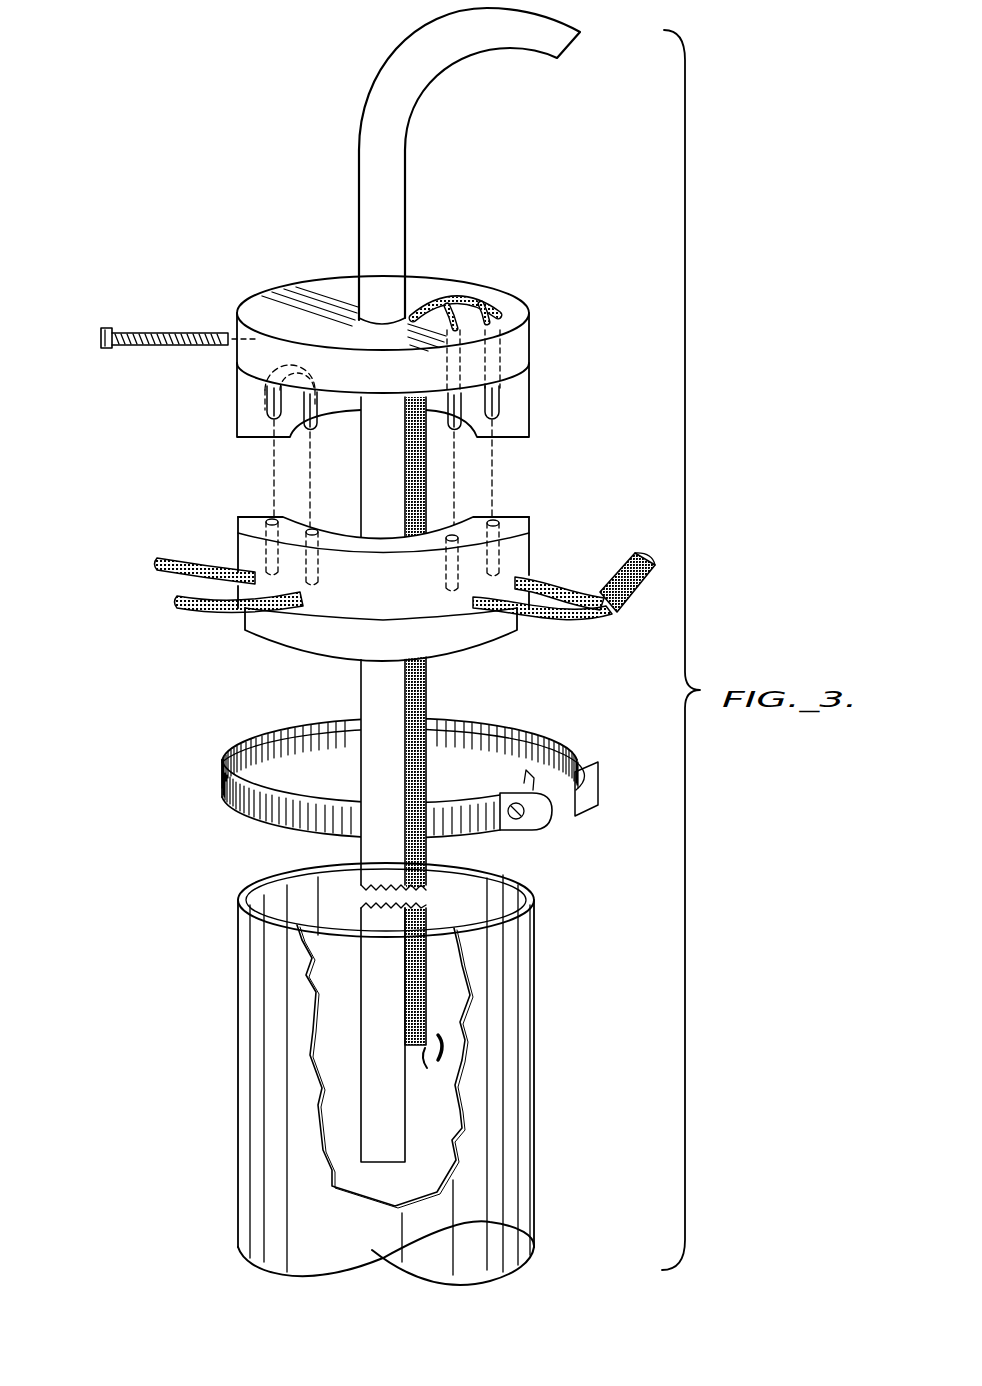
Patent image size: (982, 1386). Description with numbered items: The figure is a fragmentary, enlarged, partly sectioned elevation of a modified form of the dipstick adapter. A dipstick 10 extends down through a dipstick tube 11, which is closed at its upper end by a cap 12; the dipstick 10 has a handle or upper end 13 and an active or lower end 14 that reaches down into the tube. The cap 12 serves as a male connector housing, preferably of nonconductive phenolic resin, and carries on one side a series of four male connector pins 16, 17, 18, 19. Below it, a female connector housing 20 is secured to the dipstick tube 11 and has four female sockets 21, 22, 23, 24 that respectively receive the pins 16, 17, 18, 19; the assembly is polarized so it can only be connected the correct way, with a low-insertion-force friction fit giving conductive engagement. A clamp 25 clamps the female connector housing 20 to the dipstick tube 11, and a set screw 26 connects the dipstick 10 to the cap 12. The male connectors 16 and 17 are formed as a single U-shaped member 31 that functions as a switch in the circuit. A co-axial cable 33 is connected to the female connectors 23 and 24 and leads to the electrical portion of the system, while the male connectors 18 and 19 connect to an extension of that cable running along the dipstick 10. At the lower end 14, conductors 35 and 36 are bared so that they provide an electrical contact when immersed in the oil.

The dipstick 10 is at (362, 700).
The dipstick tube 11 is at (276, 1070).
The cap 12 is at (417, 282).
The handle or upper end 13 is at (363, 103).
The active or lower end 14 is at (430, 1062).
The male connector pin 16 is at (268, 408).
The male connector pin 17 is at (302, 430).
The male connector pin 18 is at (462, 430).
The male connector pin 19 is at (498, 408).
The female connector housing 20 is at (365, 572).
The female socket 21 is at (268, 520).
The female socket 22 is at (313, 530).
The female socket 23 is at (330, 573).
The female socket 24 is at (497, 522).
The clamp 25 is at (497, 718).
The set screw 26 is at (153, 330).
The U-shaped member 31 is at (262, 308).
The co-axial cable 33 is at (630, 586).
The conductor 35 is at (470, 303).
The conductor 36 is at (502, 306).